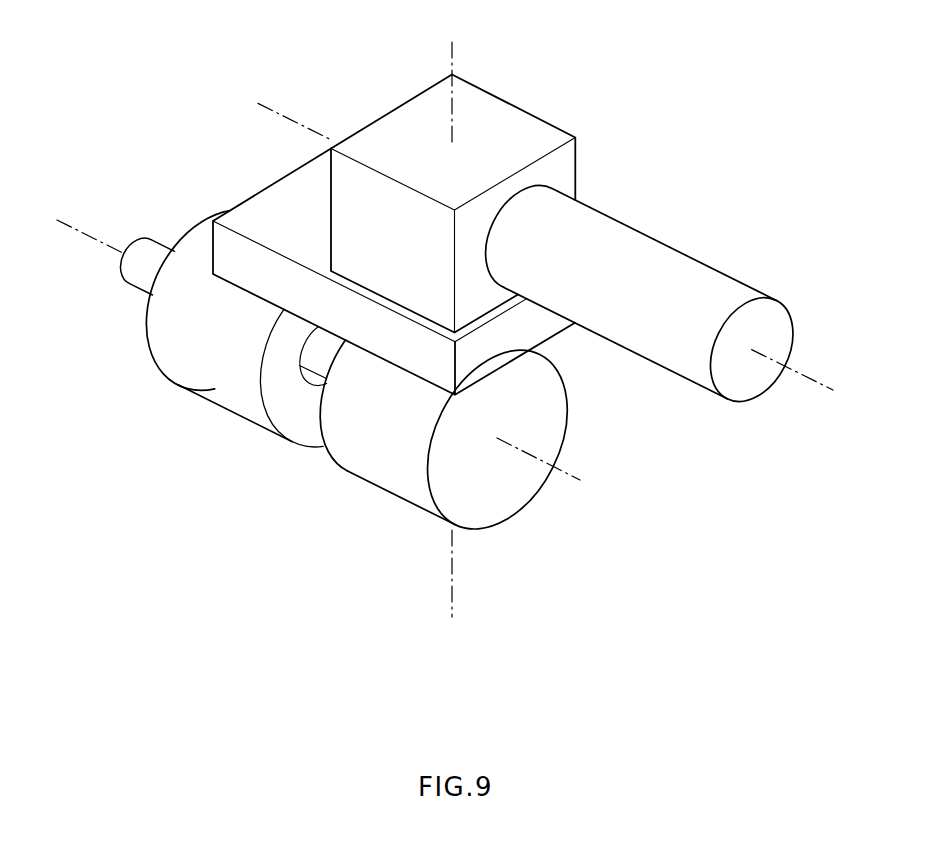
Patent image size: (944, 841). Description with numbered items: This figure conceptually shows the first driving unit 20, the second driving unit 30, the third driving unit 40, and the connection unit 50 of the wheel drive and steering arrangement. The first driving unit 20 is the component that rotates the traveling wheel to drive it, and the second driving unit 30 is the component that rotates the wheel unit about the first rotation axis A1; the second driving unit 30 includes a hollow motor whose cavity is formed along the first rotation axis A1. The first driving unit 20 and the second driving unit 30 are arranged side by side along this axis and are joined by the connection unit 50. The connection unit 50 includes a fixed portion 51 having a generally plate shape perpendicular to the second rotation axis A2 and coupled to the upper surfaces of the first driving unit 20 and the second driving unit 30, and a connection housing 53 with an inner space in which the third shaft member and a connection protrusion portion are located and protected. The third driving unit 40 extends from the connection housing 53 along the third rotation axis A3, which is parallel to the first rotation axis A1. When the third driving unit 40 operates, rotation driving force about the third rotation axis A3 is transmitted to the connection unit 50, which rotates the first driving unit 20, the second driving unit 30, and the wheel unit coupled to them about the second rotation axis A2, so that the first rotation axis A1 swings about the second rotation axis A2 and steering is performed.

The first driving unit 20 is at (393, 519).
The second driving unit 30 is at (230, 439).
The third driving unit 40 is at (620, 372).
The connection unit 50 is at (497, 78).
The fixed portion 51 is at (258, 192).
The connection housing 53 is at (533, 115).
The first rotation axis A1 is at (335, 359).
The second rotation axis A2 is at (452, 316).
The third rotation axis A3 is at (563, 258).